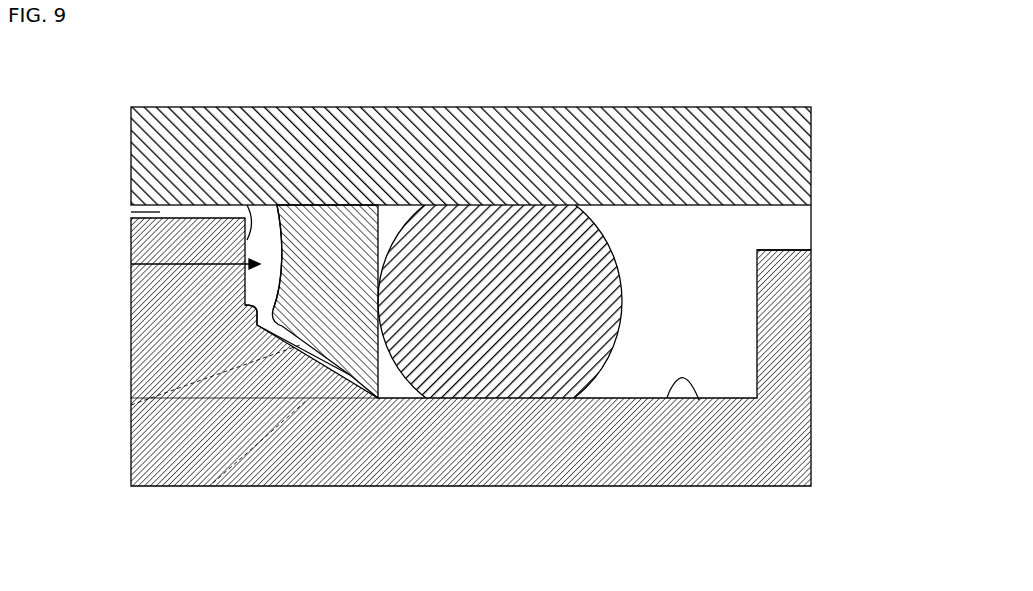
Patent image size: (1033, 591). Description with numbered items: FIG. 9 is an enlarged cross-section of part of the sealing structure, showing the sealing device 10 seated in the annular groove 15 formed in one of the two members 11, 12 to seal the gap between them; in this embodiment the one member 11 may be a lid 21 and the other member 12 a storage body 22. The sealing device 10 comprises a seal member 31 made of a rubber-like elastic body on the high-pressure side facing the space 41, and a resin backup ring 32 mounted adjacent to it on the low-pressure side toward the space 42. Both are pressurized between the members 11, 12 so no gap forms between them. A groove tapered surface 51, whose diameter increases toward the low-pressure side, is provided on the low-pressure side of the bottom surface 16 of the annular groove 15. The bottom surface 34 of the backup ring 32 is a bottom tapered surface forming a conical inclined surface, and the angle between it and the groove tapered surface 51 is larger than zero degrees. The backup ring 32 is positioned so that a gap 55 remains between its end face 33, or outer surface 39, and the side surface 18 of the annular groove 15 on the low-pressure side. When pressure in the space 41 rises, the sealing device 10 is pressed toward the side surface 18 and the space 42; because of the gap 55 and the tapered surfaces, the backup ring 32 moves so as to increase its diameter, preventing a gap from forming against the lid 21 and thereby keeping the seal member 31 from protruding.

The member 11 is at (492, 134).
The lid 21 is at (735, 105).
The member 12 is at (525, 352).
The storage body 22 is at (811, 350).
The seal member 31 is at (500, 230).
The sealing device 10 is at (500, 230).
The backup ring 32 is at (362, 218).
The end face 33 is at (259, 178).
The outer surface 39 is at (259, 178).
The bottom surface 34 is at (283, 262).
The side surface 18 is at (248, 205).
The annular groove 15 is at (682, 270).
The bottom surface 16 is at (699, 400).
The gap 55 is at (131, 266).
The groove tapered surface 51 is at (245, 307).
The space 42 is at (131, 211).
The space 41 is at (736, 238).